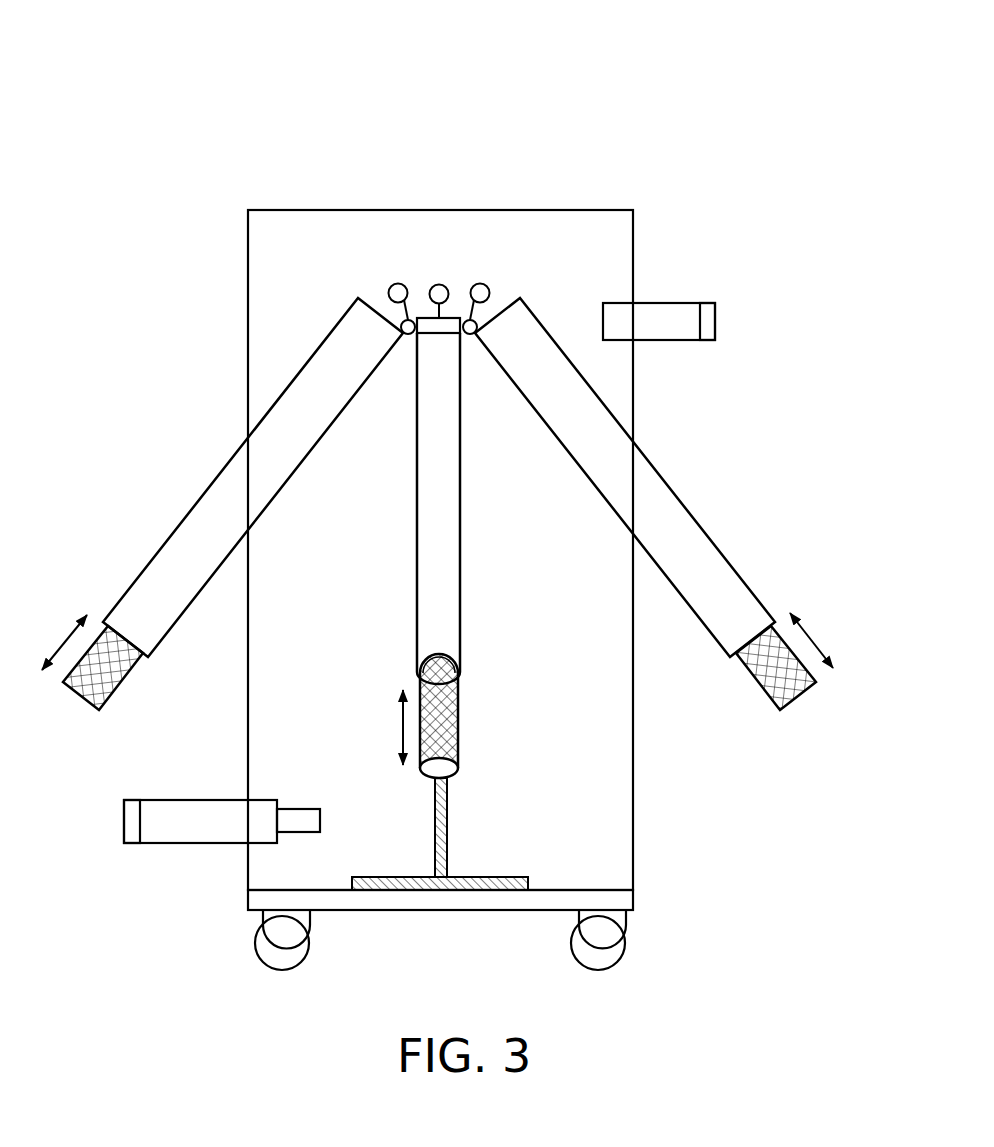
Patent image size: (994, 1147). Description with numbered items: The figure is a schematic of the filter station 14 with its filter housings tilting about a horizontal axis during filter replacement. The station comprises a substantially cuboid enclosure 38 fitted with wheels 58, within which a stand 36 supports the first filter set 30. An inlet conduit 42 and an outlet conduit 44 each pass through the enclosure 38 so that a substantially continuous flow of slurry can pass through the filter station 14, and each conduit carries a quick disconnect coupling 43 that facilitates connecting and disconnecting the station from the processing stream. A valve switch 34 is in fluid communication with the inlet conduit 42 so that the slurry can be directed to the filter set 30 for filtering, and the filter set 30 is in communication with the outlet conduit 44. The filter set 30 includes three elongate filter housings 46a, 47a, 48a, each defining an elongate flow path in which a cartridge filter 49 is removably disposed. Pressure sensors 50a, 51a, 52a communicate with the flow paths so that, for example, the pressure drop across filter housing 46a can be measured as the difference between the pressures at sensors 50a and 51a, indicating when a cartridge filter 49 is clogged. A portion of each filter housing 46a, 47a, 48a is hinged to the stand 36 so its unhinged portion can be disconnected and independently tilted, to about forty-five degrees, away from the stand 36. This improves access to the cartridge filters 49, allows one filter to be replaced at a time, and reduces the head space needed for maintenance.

The filter station 14 is at (572, 107).
The first filter set 30 is at (424, 407).
The valve switch 34 is at (303, 810).
The stand 36 is at (447, 830).
The enclosure 38 is at (247, 277).
The inlet conduit 42 is at (170, 799).
The quick disconnect coupling 43 is at (123, 822).
The outlet conduit 44 is at (678, 302).
The filter housing 46a is at (153, 570).
The filter housing 47a is at (462, 615).
The filter housing 48a is at (693, 537).
The cartridge filter 49 is at (82, 702).
The pressure sensor 50a is at (392, 285).
The pressure sensor 51a is at (440, 284).
The pressure sensor 52a is at (479, 283).
The wheels 58 is at (628, 943).